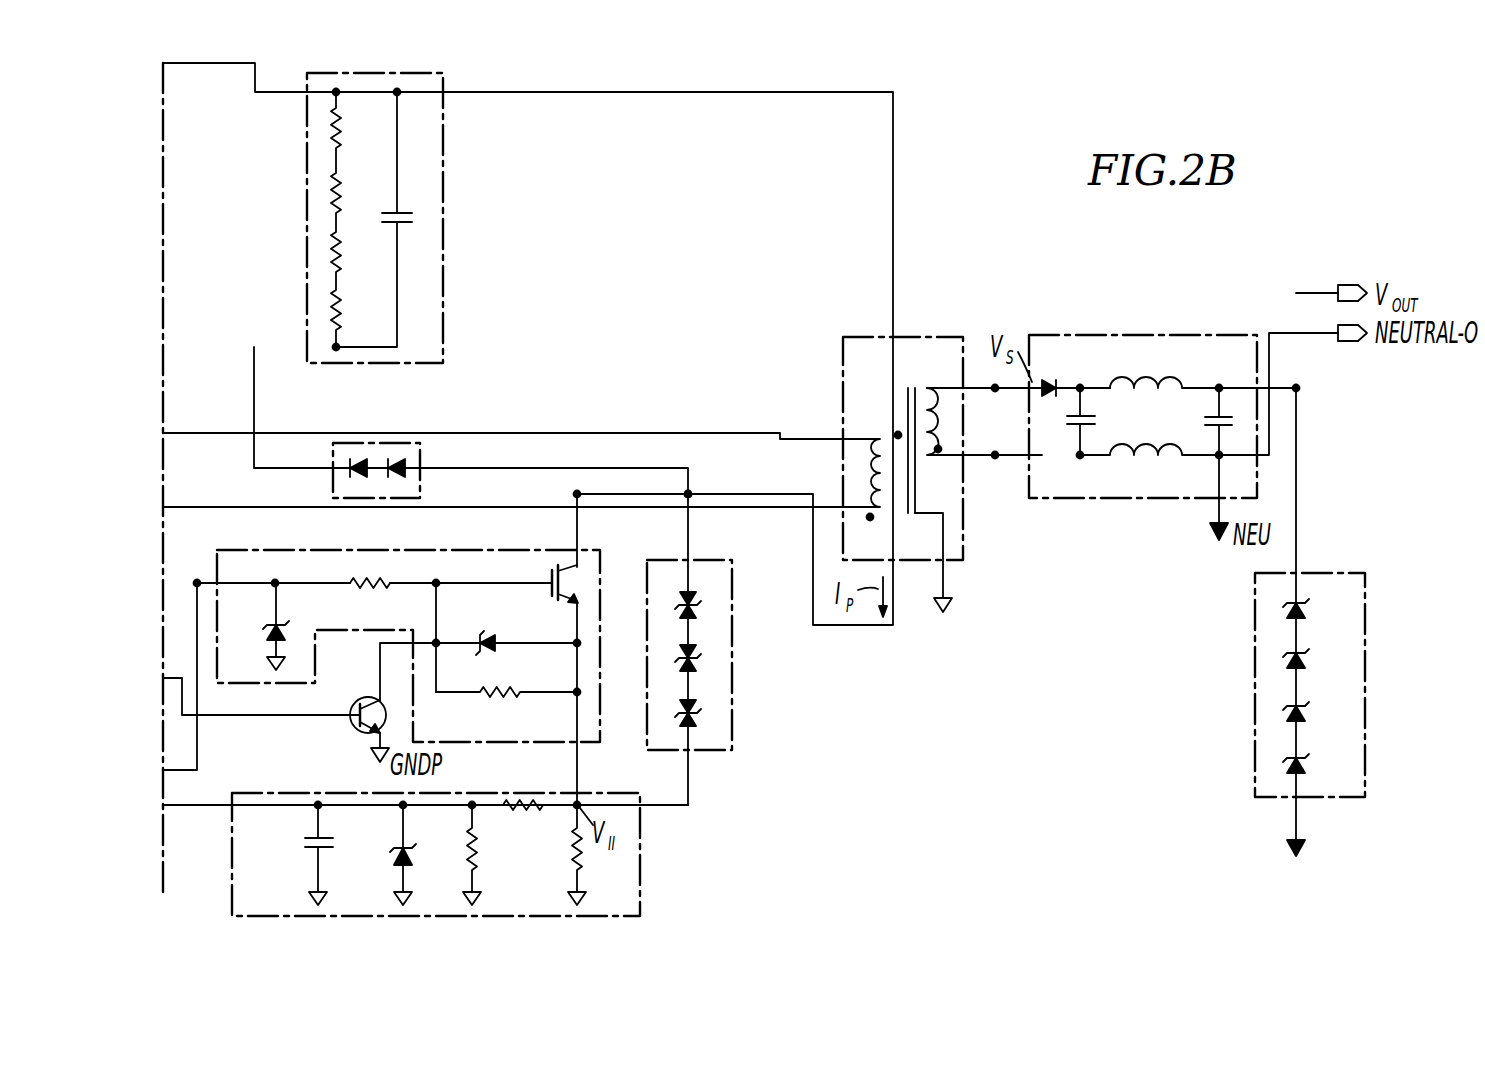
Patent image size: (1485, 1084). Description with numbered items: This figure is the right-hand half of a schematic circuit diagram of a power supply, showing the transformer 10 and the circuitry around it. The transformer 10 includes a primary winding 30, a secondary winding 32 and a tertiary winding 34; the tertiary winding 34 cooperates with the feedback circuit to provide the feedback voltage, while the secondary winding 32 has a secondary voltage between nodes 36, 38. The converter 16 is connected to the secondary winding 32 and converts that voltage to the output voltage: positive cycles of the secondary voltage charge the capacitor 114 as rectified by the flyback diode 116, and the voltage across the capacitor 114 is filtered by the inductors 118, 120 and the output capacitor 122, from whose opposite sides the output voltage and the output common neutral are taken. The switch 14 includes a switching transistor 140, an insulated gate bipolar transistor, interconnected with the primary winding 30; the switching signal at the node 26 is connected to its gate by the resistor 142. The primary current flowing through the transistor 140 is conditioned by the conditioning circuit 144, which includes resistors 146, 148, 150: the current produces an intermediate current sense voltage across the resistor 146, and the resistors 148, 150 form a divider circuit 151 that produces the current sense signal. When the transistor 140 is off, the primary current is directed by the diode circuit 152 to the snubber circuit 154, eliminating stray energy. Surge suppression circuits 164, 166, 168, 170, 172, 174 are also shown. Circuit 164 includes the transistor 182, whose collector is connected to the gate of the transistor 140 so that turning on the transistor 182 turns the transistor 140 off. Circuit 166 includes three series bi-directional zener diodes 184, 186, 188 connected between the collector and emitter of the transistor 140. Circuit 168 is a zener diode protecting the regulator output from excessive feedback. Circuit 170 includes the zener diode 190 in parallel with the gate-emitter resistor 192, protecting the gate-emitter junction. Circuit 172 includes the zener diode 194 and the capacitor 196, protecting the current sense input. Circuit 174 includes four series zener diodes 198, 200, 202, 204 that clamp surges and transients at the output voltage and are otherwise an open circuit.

The transformer 10 is at (963, 530).
The switch 14 is at (600, 553).
The converter 16 is at (1140, 335).
The node 26 is at (197, 580).
The primary winding 30 is at (893, 510).
The secondary winding 32 is at (926, 396).
The tertiary winding 34 is at (879, 446).
The node 36 is at (995, 392).
The node 38 is at (995, 458).
The capacitor 114 is at (1090, 422).
The flyback diode 116 is at (1057, 384).
The inductor 118 is at (1142, 377).
The inductor 120 is at (1146, 462).
The output capacitor 122 is at (1209, 418).
The switching transistor 140 is at (576, 603).
The resistor 142 is at (358, 588).
The conditioning circuit 144 is at (640, 900).
The resistor 146 is at (583, 865).
The resistor 148 is at (507, 808).
The resistor 150 is at (467, 855).
The divider circuit 151 is at (496, 866).
The diode circuit 152 is at (420, 490).
The snubber circuit 154 is at (443, 356).
The surge suppression circuit 164 is at (336, 738).
The surge suppression circuit 166 is at (732, 750).
The zener diode 168 is at (273, 620).
The surge suppression circuit 170 is at (530, 670).
The surge suppression circuit 172 is at (388, 840).
The surge suppression circuit 174 is at (1350, 797).
The transistor 182 is at (368, 697).
The bi-directional zener diode 184 is at (696, 610).
The bi-directional zener diode 186 is at (696, 663).
The bi-directional zener diode 188 is at (696, 717).
The zener diode 190 is at (483, 636).
The gate-emitter resistor 192 is at (487, 697).
The zener diode 194 is at (397, 857).
The capacitor 196 is at (310, 836).
The zener diode 198 is at (1302, 608).
The zener diode 200 is at (1302, 660).
The zener diode 202 is at (1302, 712).
The zener diode 204 is at (1302, 765).